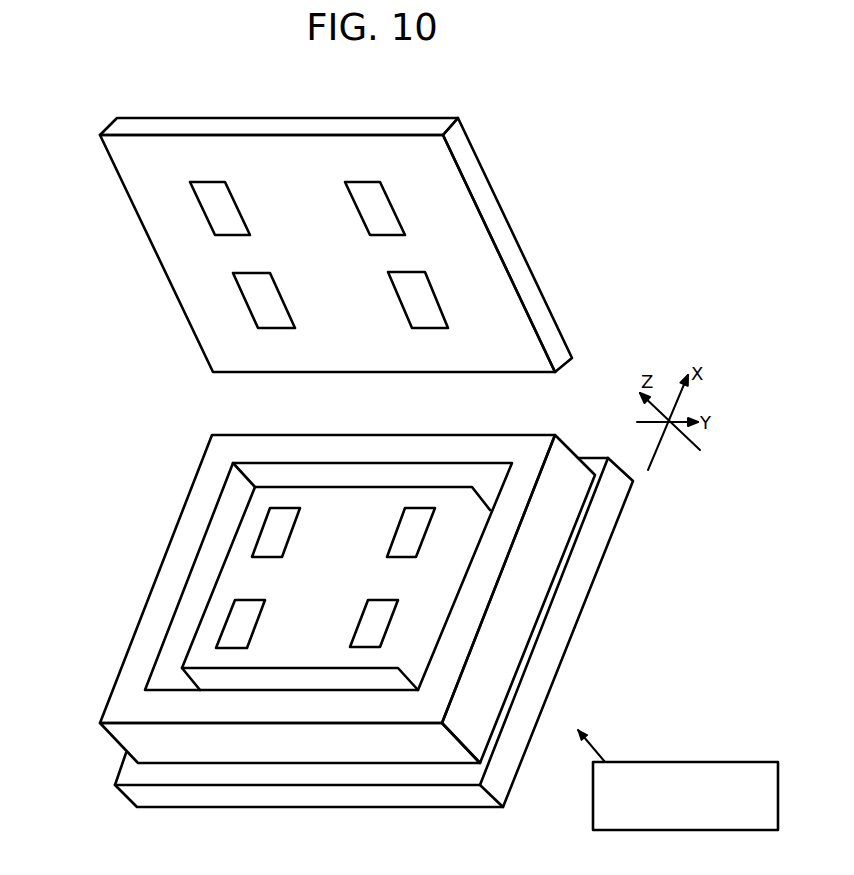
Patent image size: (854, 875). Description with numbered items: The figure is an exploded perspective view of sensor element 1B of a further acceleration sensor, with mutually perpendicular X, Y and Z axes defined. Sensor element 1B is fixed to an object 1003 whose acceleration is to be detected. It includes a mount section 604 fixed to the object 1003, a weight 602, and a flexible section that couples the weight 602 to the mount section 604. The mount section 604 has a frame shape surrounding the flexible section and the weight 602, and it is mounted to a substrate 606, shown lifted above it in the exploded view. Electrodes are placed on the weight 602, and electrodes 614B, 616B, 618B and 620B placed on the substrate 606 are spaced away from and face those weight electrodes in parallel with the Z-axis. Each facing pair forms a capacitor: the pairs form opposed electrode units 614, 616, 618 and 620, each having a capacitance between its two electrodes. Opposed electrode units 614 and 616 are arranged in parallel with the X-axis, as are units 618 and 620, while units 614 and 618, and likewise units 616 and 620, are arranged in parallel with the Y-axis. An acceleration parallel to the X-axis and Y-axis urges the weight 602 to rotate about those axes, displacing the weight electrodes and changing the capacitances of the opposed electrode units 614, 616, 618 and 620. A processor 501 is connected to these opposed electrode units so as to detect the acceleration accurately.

The sensor element 1B is at (623, 157).
The substrate 606 is at (542, 327).
The mount section 604 is at (218, 452).
The weight 602 is at (394, 653).
The object 1003 is at (128, 773).
The opposed electrode unit 614 is at (163, 415).
The electrode 614B is at (218, 208).
The opposed electrode unit 616 is at (197, 415).
The electrode 616B is at (257, 300).
The opposed electrode unit 618 is at (499, 411).
The electrode 618B is at (370, 200).
The opposed electrode unit 620 is at (541, 408).
The electrode 620B is at (422, 297).
The processor 501 is at (660, 762).